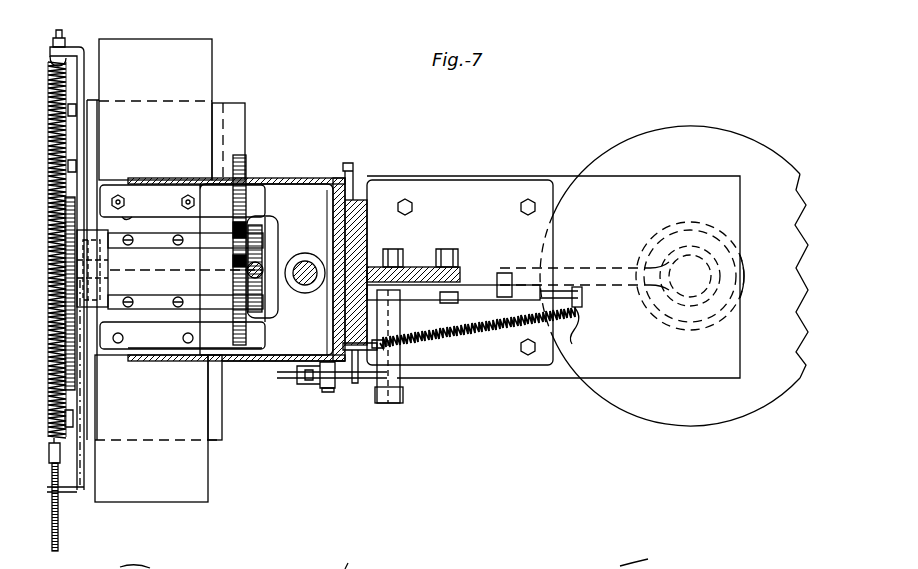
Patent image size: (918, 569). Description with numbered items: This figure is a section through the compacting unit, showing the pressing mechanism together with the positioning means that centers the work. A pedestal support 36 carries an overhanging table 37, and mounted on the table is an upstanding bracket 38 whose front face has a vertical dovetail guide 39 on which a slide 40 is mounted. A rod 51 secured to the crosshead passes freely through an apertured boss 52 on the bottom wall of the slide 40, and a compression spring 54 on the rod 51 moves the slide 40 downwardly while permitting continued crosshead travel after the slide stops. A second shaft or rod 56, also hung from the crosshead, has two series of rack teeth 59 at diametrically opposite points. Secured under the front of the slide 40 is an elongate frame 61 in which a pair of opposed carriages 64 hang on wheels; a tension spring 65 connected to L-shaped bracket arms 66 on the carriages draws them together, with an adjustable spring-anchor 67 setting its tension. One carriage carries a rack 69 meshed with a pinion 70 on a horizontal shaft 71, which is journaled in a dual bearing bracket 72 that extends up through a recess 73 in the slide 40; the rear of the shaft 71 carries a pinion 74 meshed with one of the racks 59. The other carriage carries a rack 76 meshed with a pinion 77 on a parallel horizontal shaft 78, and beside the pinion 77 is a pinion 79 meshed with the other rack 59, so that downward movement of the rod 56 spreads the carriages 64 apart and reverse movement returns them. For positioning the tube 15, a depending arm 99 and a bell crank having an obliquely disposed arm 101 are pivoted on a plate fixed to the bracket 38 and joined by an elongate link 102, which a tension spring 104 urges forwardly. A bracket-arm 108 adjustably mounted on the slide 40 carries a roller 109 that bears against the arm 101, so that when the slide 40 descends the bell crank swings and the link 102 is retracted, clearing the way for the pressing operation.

The tube 15 is at (354, 554).
The pedestal support 36 is at (700, 252).
The overhanging table 37 is at (428, 179).
The upstanding bracket 38 is at (367, 209).
The vertical dovetail guide 39 is at (353, 349).
The slide 40 is at (315, 179).
The rod 51 is at (306, 283).
The apertured boss 52 is at (322, 249).
The compression spring 54 is at (298, 258).
The shaft or rod 56 is at (268, 282).
The rack teeth 59 is at (278, 233).
The elongate frame 61 is at (200, 64).
The carriages 64 is at (240, 117).
The tension spring 65 is at (52, 158).
The L-shaped bracket arms 66 is at (83, 52).
The adjustable spring-anchor 67 is at (52, 540).
The rack 69 is at (66, 393).
The pinion 70 is at (65, 318).
The horizontal shaft 71 is at (145, 317).
The dual bearing bracket 72 is at (200, 316).
The recess 73 is at (136, 224).
The pinion 74 is at (212, 362).
The rack 76 is at (246, 163).
The pinion 77 is at (233, 228).
The horizontal shaft 78 is at (152, 239).
The pinion 79 is at (254, 226).
The depending arm 99 is at (473, 334).
The bell crank arm 101 is at (379, 398).
The elongate link 102 is at (580, 303).
The tension spring 104 is at (572, 333).
The bracket-arm 108 is at (308, 389).
The roller 109 is at (333, 393).